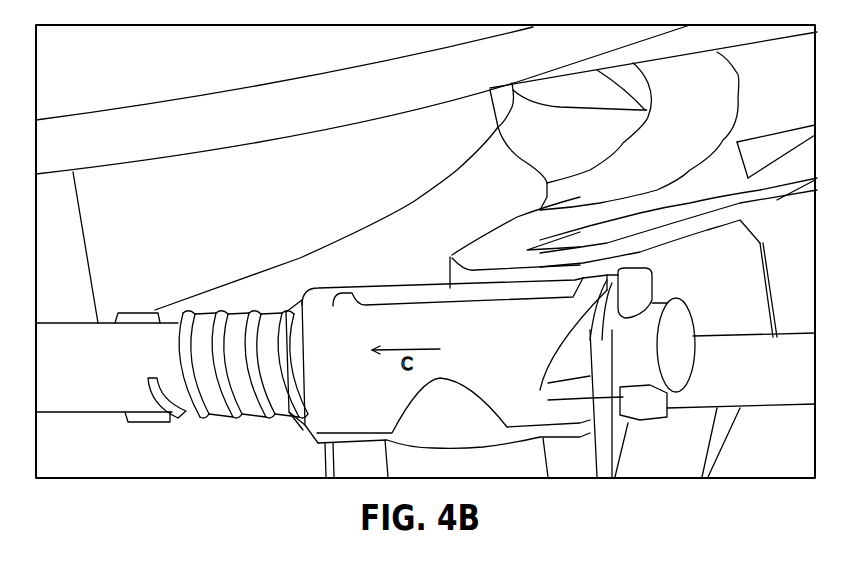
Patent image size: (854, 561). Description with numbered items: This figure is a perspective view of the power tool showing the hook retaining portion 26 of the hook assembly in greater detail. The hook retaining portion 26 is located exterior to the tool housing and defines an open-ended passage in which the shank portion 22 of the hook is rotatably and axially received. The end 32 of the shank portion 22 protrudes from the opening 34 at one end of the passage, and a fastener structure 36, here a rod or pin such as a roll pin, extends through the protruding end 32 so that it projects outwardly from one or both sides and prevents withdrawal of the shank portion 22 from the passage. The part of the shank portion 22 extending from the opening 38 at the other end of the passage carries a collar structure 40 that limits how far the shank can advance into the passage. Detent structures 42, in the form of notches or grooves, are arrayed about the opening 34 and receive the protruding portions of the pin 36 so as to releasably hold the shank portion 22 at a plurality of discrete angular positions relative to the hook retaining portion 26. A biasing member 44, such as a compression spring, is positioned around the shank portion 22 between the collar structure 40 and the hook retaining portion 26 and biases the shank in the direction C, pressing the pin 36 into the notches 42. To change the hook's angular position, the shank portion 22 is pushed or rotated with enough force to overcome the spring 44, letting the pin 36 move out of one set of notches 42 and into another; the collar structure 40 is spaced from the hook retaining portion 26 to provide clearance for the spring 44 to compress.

The shank portion 22 is at (92, 318).
The hook retaining portion 26 is at (405, 313).
The end of the shank portion 32 is at (695, 328).
The opening 34 is at (613, 286).
The fastener structure 36 is at (653, 272).
The opening 38 is at (292, 303).
The collar structure 40 is at (135, 425).
The detent structures 42 is at (556, 384).
The biasing member 44 is at (221, 420).